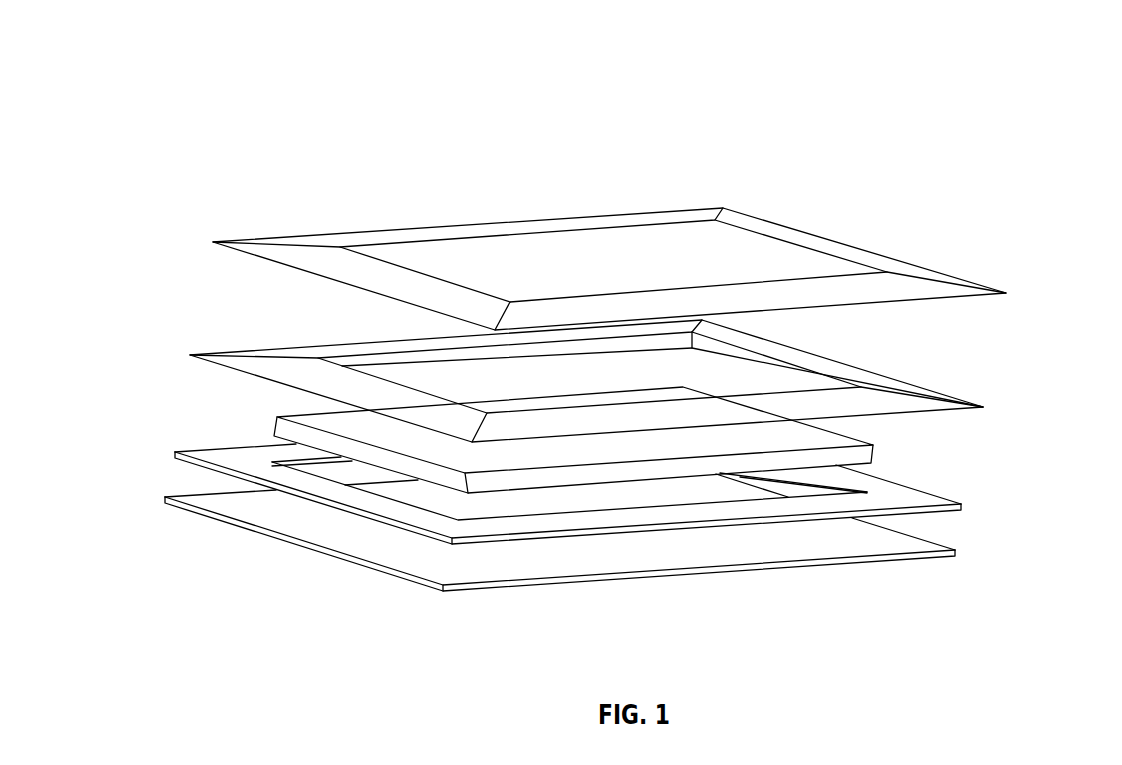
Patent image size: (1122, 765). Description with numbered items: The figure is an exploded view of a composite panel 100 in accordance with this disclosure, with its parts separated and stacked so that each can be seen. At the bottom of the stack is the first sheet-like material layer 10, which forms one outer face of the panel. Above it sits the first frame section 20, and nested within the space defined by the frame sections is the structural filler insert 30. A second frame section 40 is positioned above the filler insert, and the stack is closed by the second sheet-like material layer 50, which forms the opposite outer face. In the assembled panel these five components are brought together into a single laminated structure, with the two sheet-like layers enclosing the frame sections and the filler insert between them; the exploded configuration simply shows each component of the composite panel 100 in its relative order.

The composite panel 100 is at (136, 72).
The first sheet-like material layer 10 is at (303, 550).
The first frame section 20 is at (930, 492).
The structural filler insert 30 is at (270, 430).
The second frame section 40 is at (912, 382).
The second sheet-like material layer 50 is at (837, 242).